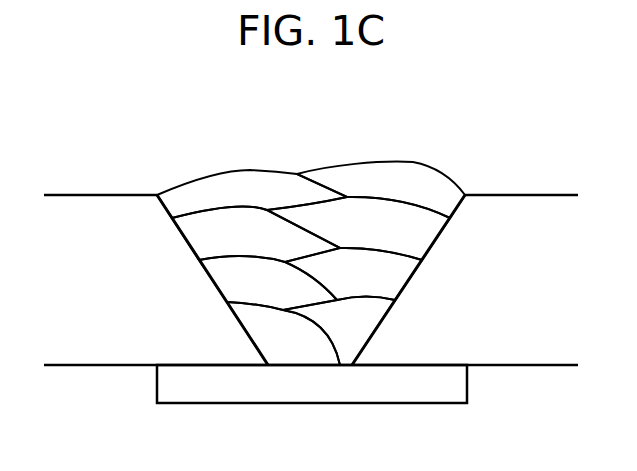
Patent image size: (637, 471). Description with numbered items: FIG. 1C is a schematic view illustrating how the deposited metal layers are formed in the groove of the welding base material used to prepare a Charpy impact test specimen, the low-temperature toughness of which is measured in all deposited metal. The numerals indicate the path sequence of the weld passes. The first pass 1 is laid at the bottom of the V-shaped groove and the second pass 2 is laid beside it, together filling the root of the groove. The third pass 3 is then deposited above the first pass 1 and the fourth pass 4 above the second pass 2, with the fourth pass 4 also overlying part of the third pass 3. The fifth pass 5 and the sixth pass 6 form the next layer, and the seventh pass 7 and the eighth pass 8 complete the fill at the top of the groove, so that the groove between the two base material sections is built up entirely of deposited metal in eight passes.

The first pass deposited metal layer 1 is at (283, 333).
The second pass deposited metal layer 2 is at (339, 331).
The third pass deposited metal layer 3 is at (268, 283).
The fourth pass deposited metal layer 4 is at (353, 274).
The fifth pass deposited metal layer 5 is at (256, 234).
The sixth pass deposited metal layer 6 is at (358, 228).
The seventh pass deposited metal layer 7 is at (252, 194).
The eighth pass deposited metal layer 8 is at (381, 190).